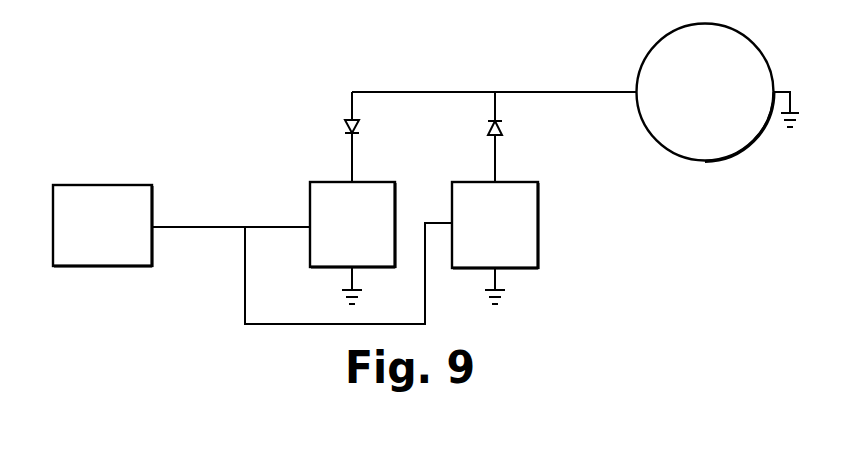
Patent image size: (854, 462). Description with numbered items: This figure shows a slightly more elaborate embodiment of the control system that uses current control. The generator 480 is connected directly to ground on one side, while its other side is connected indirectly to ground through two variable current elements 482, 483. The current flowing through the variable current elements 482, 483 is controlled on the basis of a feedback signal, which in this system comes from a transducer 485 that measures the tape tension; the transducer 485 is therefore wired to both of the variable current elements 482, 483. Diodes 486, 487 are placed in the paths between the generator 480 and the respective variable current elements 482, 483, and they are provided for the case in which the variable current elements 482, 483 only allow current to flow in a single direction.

The generator 480 is at (733, 159).
The variable current element 482 is at (310, 202).
The variable current element 483 is at (540, 215).
The transducer 485 is at (117, 185).
The diode 486 is at (347, 131).
The diode 487 is at (503, 124).